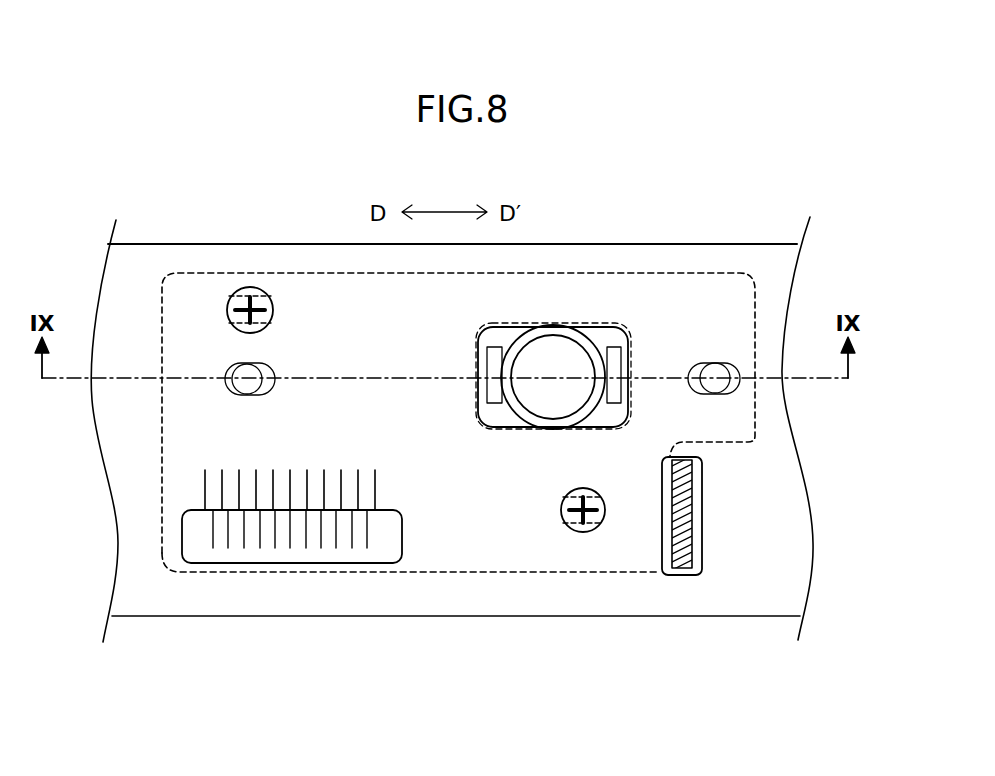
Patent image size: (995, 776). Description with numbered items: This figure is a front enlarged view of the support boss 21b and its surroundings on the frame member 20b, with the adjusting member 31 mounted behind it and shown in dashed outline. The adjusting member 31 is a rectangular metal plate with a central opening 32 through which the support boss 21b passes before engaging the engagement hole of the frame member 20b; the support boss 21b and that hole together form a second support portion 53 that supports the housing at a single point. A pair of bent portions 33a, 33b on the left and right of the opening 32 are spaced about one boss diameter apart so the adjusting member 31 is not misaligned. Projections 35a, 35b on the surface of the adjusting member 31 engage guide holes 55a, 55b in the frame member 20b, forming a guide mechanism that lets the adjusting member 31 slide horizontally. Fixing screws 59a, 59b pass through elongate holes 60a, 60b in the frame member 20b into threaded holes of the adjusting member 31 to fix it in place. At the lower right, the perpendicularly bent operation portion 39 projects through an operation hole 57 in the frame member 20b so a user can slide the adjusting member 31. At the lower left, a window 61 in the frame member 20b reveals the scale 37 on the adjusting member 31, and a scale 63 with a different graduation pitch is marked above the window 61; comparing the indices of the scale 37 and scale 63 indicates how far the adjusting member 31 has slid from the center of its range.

The frame member 20b is at (502, 616).
The adjusting member 31 is at (160, 302).
The opening 32 is at (613, 323).
The second support portion 53 is at (477, 360).
The support boss 21b is at (543, 353).
The bent portion 33a is at (497, 393).
The bent portion 33b is at (613, 393).
The projection 35a is at (248, 377).
The projection 35b is at (712, 372).
The guide hole 55a is at (277, 378).
The guide hole 55b is at (730, 363).
The fixing screw 59a is at (245, 295).
The fixing screw 59b is at (588, 532).
The elongate hole 60a is at (273, 308).
The elongate hole 60b is at (560, 510).
The scale 37 is at (377, 530).
The window 61 is at (227, 562).
The scale 63 is at (377, 492).
The operation hole 57 is at (703, 498).
The operation portion 39 is at (688, 527).